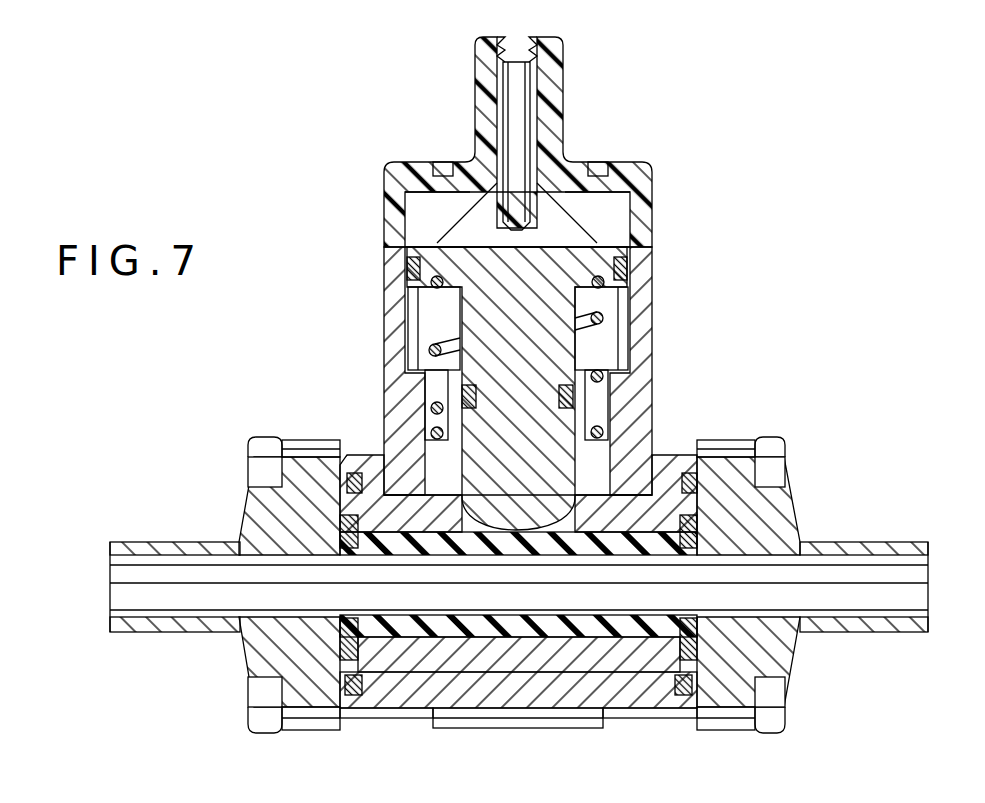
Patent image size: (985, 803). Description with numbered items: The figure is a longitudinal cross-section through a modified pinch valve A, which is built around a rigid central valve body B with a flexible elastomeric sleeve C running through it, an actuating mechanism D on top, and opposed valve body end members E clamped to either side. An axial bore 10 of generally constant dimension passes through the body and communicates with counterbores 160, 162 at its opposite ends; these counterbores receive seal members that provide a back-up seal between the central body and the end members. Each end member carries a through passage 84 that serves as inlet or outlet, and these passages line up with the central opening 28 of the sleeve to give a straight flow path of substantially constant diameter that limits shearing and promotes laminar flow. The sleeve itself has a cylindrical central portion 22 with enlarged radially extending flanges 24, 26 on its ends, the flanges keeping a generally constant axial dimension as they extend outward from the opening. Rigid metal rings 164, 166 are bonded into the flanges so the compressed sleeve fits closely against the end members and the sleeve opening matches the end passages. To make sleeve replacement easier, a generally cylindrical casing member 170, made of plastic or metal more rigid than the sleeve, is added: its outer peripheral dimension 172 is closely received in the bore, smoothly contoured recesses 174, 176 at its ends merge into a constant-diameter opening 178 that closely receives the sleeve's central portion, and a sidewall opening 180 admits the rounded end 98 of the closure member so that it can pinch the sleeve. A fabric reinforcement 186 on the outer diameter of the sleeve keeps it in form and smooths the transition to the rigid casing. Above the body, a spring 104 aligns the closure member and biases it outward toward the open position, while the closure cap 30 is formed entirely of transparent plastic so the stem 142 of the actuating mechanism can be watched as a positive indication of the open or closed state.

The stem 142 is at (513, 118).
The closure cap 30 is at (638, 176).
The pinch valve A is at (752, 248).
The actuating mechanism D is at (438, 312).
The spring 104 is at (603, 318).
The counterbore 162 is at (690, 472).
The valve body end members E is at (228, 518).
The counterbore 160 is at (373, 479).
The axial bore 10 is at (405, 498).
The rounded end 98 is at (517, 388).
The through passages 84 is at (130, 617).
The rigid metal ring 164 is at (345, 520).
The flange 24 is at (357, 630).
The sidewall opening 180 is at (478, 555).
The opening 178 is at (490, 636).
The cylindrical central portion 22 is at (534, 548).
The flexible elastomeric sleeve C is at (573, 556).
The flange 26 is at (673, 536).
The central opening 28 is at (663, 548).
The rigid metal ring 166 is at (690, 628).
The recess 174 is at (353, 660).
The outer peripheral dimension 172 is at (444, 720).
The central valve body B is at (505, 695).
The fabric reinforcement 186 is at (553, 640).
The casing member 170 is at (604, 655).
The recess 176 is at (690, 660).